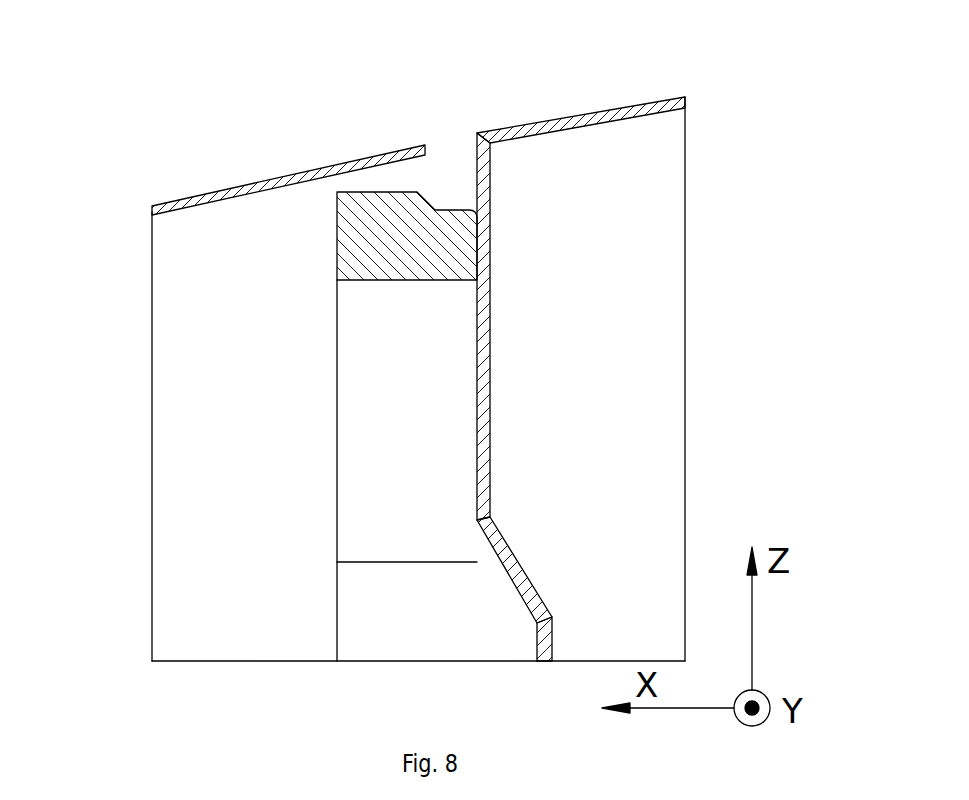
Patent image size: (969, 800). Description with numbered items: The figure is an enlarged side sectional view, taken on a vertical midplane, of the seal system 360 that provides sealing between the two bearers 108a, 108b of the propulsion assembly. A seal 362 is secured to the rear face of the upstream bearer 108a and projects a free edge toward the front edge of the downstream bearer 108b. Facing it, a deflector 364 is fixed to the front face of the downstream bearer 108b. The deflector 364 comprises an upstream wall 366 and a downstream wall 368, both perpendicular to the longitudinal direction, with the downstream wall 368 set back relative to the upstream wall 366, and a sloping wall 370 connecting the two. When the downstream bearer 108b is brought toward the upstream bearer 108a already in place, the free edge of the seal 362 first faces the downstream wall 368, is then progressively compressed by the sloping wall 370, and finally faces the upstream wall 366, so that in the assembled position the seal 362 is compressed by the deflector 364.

The upstream bearer 108a is at (153, 210).
The downstream bearer 108b is at (600, 113).
The seal system 360 is at (740, 152).
The seal 362 is at (387, 210).
The deflector 364 is at (715, 335).
The upstream wall 366 is at (480, 282).
The downstream wall 368 is at (543, 643).
The sloping wall 370 is at (505, 555).